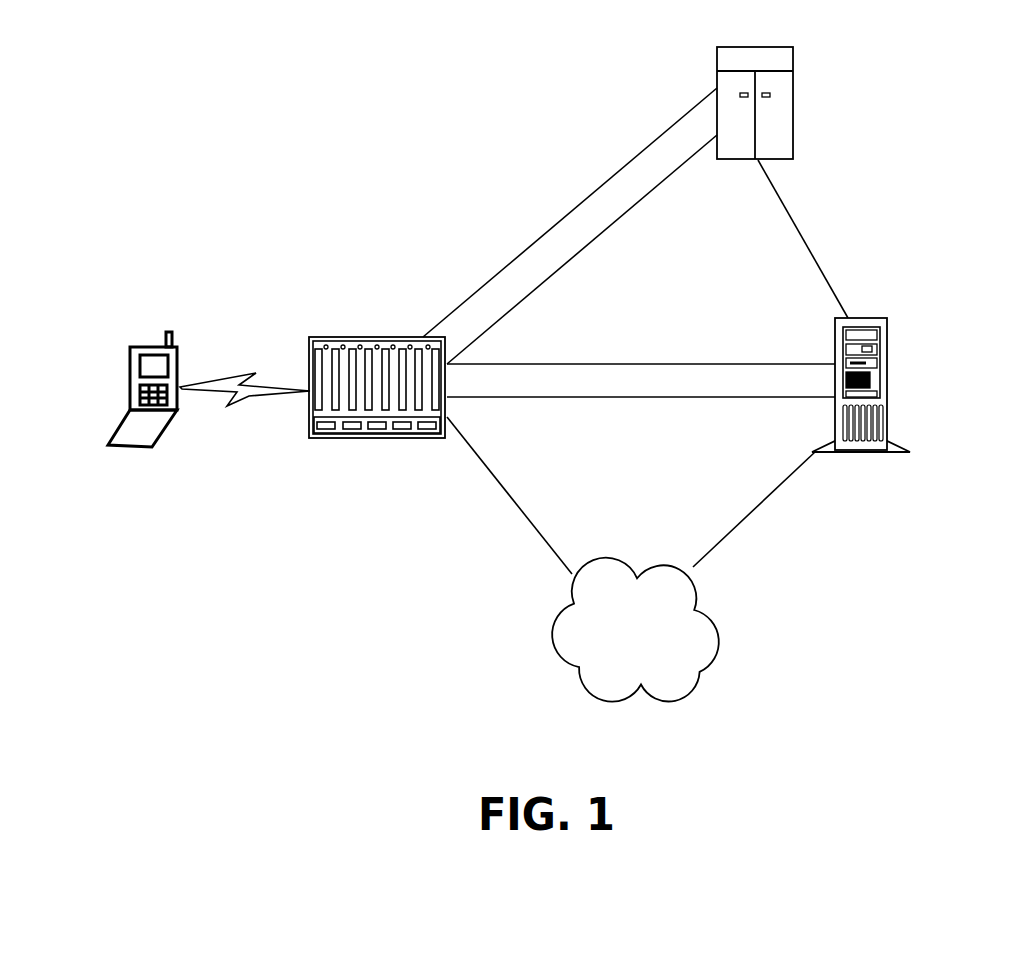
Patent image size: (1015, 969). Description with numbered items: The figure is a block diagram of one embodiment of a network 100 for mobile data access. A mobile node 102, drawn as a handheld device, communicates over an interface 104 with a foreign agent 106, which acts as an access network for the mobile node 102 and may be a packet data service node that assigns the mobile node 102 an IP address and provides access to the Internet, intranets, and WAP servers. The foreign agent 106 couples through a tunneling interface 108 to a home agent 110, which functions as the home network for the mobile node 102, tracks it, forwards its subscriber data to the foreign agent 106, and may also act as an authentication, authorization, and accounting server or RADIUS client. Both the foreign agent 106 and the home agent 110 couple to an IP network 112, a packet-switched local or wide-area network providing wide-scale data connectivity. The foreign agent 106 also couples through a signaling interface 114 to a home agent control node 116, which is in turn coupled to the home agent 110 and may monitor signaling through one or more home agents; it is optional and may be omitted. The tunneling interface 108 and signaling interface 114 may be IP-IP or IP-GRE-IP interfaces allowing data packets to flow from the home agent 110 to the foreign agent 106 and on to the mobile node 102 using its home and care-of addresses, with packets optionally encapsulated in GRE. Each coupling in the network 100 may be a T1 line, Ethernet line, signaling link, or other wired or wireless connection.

The network 100 is at (243, 88).
The mobile node 102 is at (129, 448).
The interface 104 is at (240, 412).
The foreign agent 106 is at (332, 337).
The tunneling interface 108 is at (633, 363).
The home agent 110 is at (878, 318).
The IP network 112 is at (619, 669).
The signaling interface 114 is at (538, 242).
The home agent control node 116 is at (758, 47).